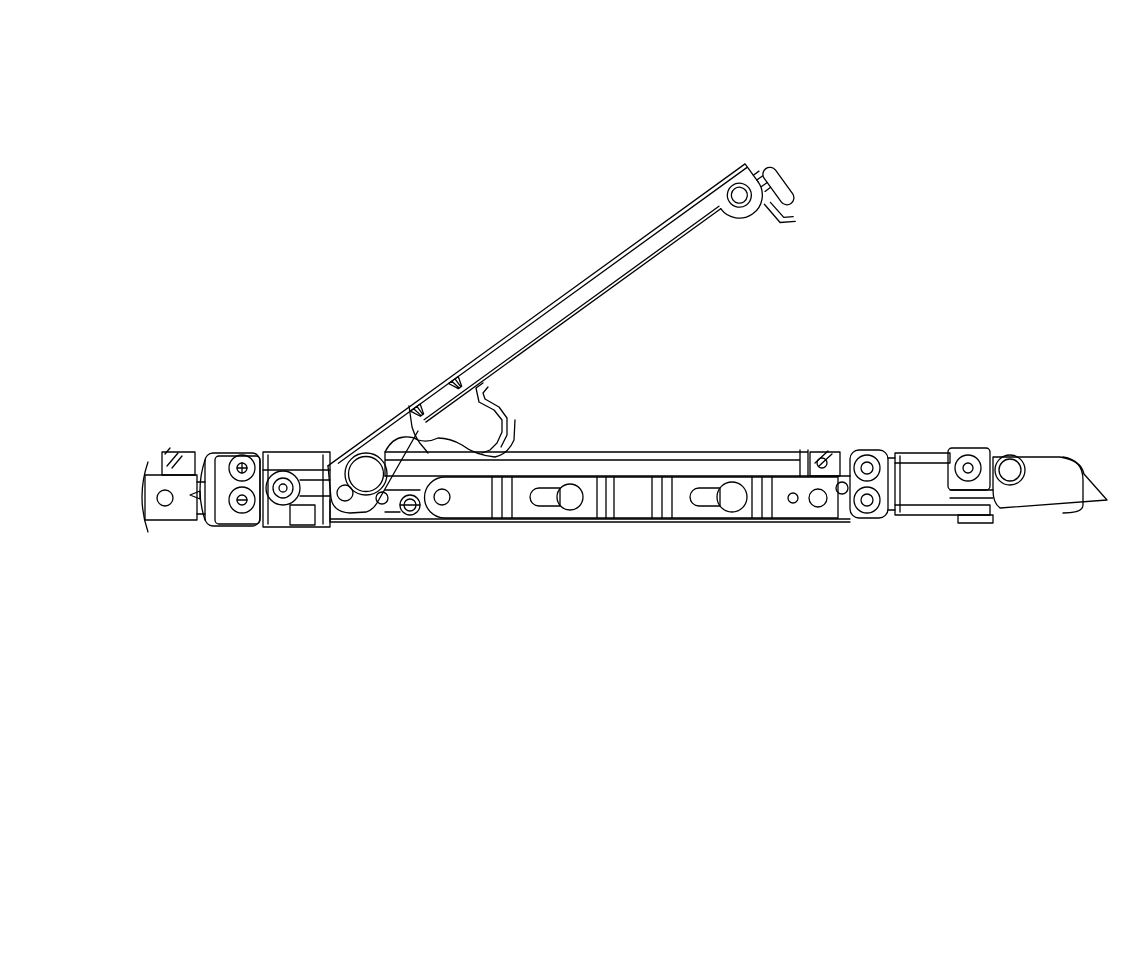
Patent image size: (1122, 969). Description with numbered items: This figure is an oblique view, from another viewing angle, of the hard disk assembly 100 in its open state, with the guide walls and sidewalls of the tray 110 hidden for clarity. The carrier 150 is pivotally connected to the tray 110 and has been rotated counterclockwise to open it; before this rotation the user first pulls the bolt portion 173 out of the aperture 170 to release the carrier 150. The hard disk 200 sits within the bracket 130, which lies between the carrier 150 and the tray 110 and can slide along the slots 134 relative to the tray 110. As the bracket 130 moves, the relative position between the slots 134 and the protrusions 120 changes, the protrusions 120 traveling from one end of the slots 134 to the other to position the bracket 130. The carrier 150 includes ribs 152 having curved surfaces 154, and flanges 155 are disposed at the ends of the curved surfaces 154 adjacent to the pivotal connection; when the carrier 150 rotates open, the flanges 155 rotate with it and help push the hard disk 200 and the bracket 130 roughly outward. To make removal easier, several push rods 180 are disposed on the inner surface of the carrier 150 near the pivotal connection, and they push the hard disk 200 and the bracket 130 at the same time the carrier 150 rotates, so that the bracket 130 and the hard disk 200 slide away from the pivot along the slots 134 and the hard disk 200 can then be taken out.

The hard disk assembly 100 is at (146, 78).
The tray 110 is at (557, 521).
The protrusions 120 is at (737, 498).
The bracket 130 is at (630, 503).
The slots 134 is at (704, 505).
The carrier 150 is at (612, 277).
The ribs 152 is at (473, 424).
The curved surfaces 154 is at (497, 450).
The flanges 155 is at (413, 408).
The aperture 170 is at (855, 508).
The bolt portion 173 is at (782, 185).
The push rods 180 is at (345, 514).
The hard disk 200 is at (775, 455).